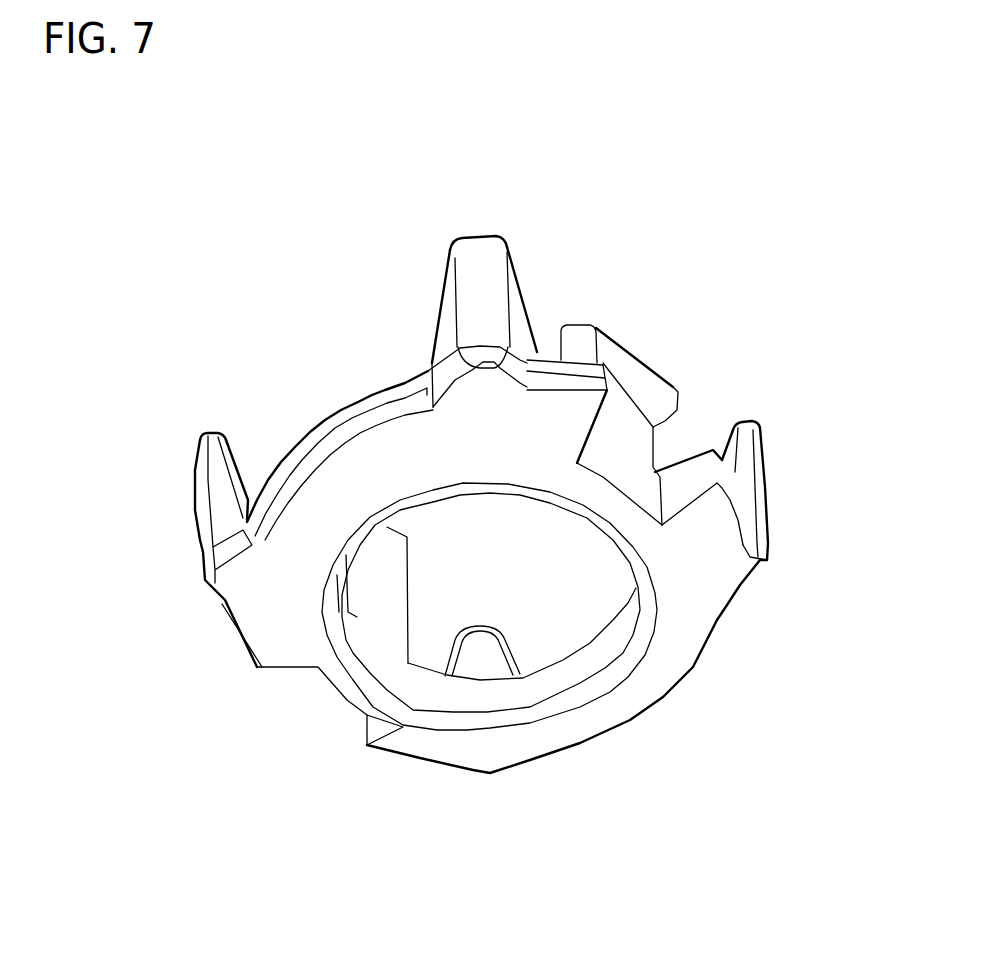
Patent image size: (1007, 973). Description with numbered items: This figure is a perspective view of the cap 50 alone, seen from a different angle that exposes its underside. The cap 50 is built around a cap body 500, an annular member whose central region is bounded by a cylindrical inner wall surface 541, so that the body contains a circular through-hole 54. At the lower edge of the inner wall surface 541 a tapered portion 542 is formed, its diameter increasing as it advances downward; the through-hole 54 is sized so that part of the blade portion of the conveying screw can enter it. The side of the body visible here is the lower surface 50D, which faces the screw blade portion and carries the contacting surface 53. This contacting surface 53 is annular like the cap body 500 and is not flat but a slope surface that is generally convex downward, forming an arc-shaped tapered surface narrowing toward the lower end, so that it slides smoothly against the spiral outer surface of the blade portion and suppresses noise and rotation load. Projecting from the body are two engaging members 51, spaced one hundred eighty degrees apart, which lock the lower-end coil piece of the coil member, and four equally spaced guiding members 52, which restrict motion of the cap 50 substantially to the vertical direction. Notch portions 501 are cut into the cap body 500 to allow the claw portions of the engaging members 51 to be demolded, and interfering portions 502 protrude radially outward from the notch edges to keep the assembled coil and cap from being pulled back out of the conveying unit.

The cap 50 is at (313, 221).
The lower surface 50D is at (700, 676).
The cap body 500 is at (380, 395).
The contacting surface 53 is at (360, 478).
The guiding member 52 is at (474, 237).
The interfering portion 502 is at (605, 362).
The engaging member 51 is at (637, 352).
The notch portion 501 is at (633, 447).
The through-hole 54 is at (597, 577).
The inner wall surface 541 is at (580, 667).
The tapered portion 542 is at (500, 717).